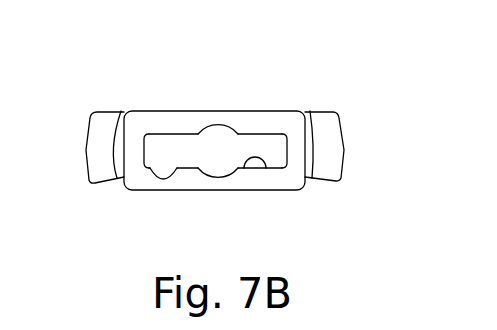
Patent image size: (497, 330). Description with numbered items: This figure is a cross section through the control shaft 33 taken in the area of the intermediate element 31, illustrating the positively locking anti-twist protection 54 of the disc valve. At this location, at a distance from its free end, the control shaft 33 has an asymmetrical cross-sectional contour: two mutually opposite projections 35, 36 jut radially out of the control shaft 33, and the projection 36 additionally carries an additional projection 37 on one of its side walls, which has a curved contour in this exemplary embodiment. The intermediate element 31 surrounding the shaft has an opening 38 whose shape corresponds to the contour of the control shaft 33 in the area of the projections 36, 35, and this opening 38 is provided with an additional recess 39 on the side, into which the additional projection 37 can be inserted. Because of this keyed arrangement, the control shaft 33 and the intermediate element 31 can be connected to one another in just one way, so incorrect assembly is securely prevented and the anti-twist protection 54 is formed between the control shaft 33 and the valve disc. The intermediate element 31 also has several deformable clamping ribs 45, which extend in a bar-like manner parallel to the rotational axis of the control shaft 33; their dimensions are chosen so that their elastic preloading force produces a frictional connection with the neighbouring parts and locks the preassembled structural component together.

The intermediate element 31 is at (289, 182).
The control shaft 33 is at (222, 137).
The projection 35 is at (270, 133).
The projection 36 is at (172, 142).
The additional projection 37 is at (167, 165).
The opening 38 is at (264, 165).
The additional recess 39 is at (168, 177).
The clamping ribs 45 is at (112, 152).
The anti-twist protection 54 is at (257, 127).